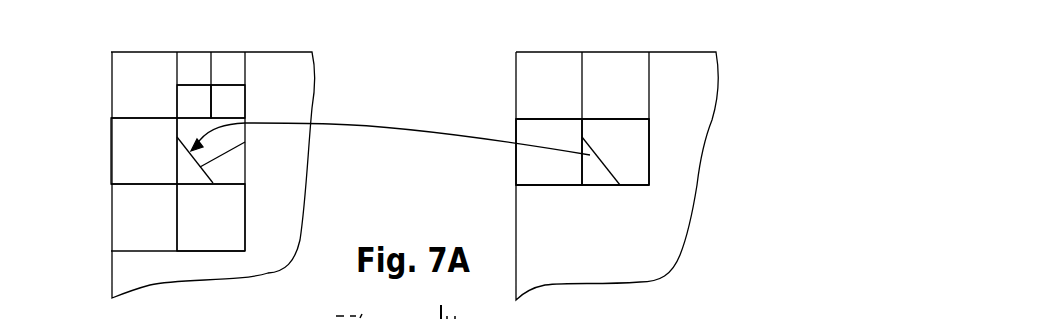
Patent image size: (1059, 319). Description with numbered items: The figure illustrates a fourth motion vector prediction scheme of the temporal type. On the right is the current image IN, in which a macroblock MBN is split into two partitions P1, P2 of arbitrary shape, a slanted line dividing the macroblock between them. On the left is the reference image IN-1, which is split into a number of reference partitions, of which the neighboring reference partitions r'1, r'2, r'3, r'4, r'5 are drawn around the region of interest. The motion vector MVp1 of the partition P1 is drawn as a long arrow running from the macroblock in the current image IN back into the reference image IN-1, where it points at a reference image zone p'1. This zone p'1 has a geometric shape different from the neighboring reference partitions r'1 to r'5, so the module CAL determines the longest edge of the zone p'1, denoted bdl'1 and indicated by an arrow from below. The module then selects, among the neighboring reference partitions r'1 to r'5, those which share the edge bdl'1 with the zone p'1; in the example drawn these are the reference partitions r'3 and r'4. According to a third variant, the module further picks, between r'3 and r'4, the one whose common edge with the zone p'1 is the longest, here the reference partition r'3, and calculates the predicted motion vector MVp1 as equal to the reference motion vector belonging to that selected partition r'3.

The reference image IN-1 is at (271, 76).
The current image IN is at (675, 78).
The reference partition r'1 is at (140, 97).
The reference partition r'2 is at (286, 101).
The reference partition r'3 is at (269, 149).
The reference partition r'4 is at (258, 206).
The reference partition r'5 is at (115, 151).
The reference image zone p'1 is at (137, 156).
The longest edge bdl'1 is at (207, 239).
The motion vector MVp1 is at (364, 125).
The partition P1 is at (587, 163).
The partition P2 is at (637, 163).
The macroblock MBN is at (648, 198).